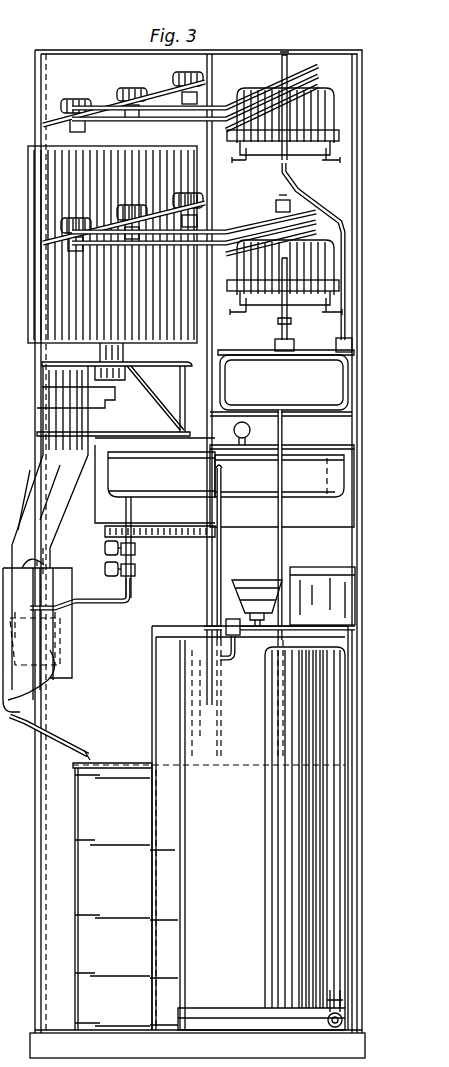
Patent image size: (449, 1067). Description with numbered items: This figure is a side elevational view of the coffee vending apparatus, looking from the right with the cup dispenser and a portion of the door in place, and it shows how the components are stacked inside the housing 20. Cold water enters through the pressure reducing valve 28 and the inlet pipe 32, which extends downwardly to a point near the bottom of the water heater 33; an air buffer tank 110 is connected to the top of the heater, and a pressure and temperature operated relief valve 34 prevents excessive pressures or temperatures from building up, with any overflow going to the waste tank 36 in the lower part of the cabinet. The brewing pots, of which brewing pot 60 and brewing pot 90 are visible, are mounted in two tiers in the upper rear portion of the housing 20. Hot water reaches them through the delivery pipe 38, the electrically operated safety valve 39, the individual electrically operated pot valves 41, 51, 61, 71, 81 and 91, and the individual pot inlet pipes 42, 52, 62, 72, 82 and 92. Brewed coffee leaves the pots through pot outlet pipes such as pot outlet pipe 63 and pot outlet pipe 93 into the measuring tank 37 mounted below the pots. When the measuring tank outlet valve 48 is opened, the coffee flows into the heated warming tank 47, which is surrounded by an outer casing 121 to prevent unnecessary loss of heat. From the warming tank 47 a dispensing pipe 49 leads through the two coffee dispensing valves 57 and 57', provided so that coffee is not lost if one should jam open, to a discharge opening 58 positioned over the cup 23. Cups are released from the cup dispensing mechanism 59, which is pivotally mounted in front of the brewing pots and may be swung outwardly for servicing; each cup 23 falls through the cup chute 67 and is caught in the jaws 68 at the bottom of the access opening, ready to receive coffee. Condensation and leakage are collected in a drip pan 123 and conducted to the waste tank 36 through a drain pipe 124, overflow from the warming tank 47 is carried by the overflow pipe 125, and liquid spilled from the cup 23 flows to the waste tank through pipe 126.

The housing 20 is at (70, 43).
The cup 23 is at (62, 655).
The pressure reducing valve 28 is at (326, 1013).
The inlet pipe 32 is at (338, 867).
The water heater 33 is at (205, 706).
The relief valve 34 is at (255, 572).
The waste tank 36 is at (118, 787).
The measuring tank 37 is at (261, 392).
The delivery pipe 38 is at (222, 596).
The safety valve 39 is at (226, 626).
The pot valve 41 is at (77, 92).
The pot inlet pipe 42 is at (114, 122).
The warming tank 47 is at (168, 490).
The measuring tank outlet valve 48 is at (254, 433).
The dispensing pipe 49 is at (133, 510).
The pot valve 51 is at (129, 88).
The pot inlet pipe 52 is at (163, 110).
The coffee dispensing valve 57 is at (141, 548).
The coffee dispensing valve 57' is at (141, 567).
The discharge opening 58 is at (88, 610).
The cup dispensing mechanism 59 is at (92, 170).
The brewing pot 60 is at (305, 108).
The pot valve 61 is at (188, 68).
The pot inlet pipe 62 is at (206, 106).
The pot outlet pipe 63 is at (318, 257).
The cup chute 67 is at (56, 476).
The jaws 68 is at (55, 641).
The pot valve 71 is at (72, 219).
The pot inlet pipe 72 is at (94, 250).
The pot valve 81 is at (130, 211).
The pot inlet pipe 82 is at (228, 222).
The brewing pot 90 is at (266, 276).
The pot valve 91 is at (190, 200).
The pot inlet pipe 92 is at (258, 212).
The pot outlet pipe 93 is at (286, 328).
The air buffer tank 110 is at (318, 592).
The outer casing 121 is at (232, 528).
The drip pan 123 is at (292, 416).
The drain pipe 124 is at (283, 513).
The overflow pipe 125 is at (236, 492).
The pipe 126 is at (78, 746).